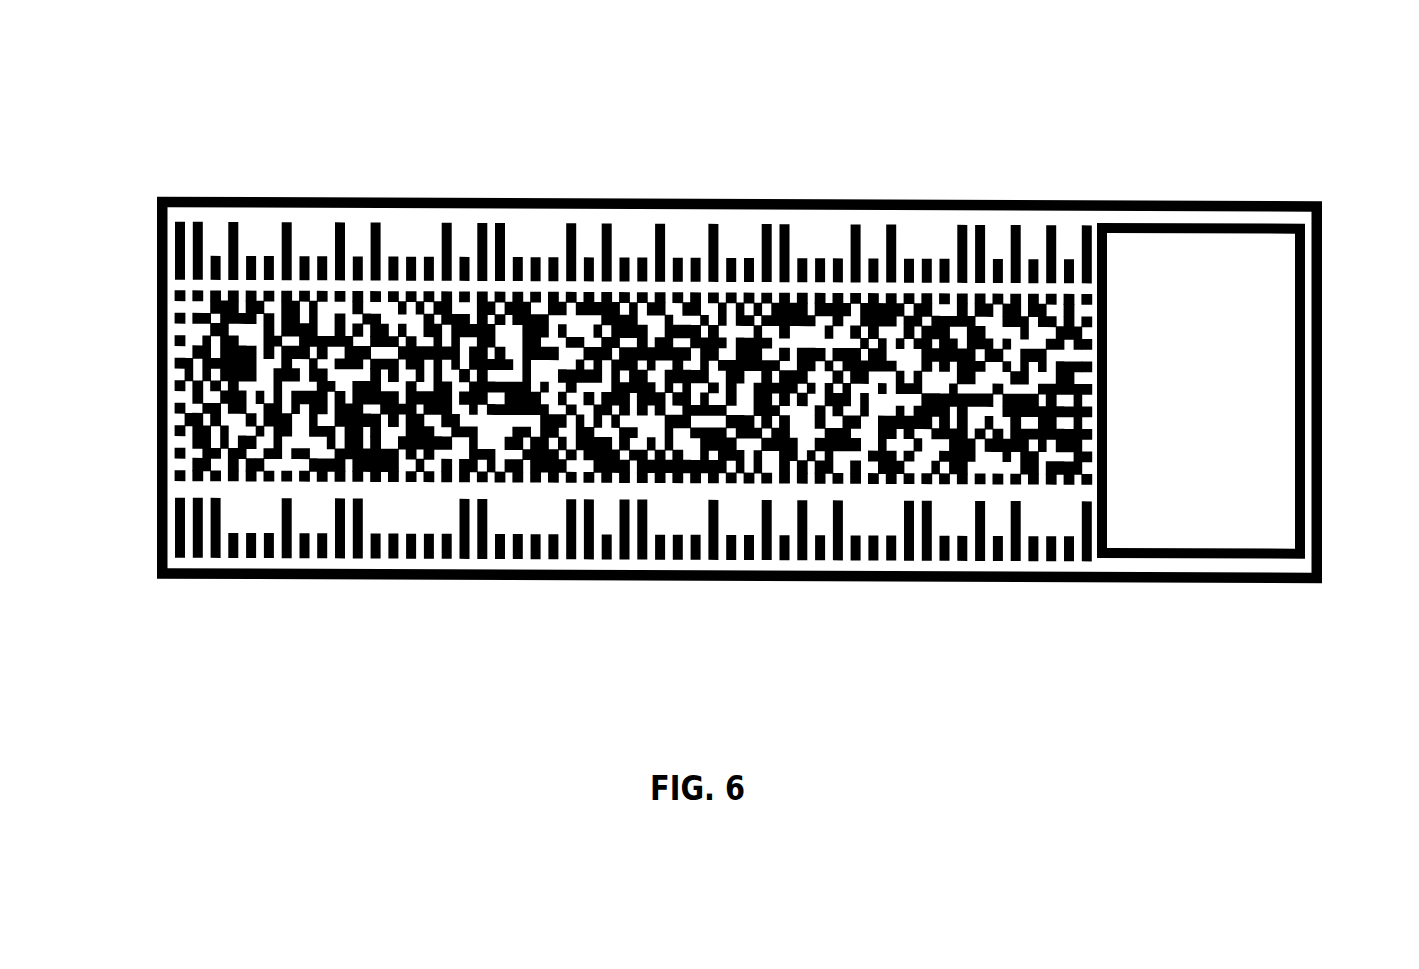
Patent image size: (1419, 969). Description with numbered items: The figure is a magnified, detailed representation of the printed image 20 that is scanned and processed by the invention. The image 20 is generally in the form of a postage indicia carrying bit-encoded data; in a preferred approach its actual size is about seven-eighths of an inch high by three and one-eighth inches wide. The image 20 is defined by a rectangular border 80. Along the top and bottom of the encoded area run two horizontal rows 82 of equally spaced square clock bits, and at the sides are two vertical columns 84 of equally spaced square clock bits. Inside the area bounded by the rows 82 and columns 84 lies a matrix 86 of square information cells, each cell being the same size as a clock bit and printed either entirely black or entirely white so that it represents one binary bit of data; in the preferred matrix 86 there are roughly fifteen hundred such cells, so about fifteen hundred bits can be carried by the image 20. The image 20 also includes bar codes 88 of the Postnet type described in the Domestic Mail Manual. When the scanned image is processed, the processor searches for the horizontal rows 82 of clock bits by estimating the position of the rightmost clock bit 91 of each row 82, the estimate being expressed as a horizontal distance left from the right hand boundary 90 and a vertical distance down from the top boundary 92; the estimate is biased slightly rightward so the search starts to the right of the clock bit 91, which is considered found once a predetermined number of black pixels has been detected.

The image 20 is at (718, 366).
The rectangular border 80 is at (629, 374).
The horizontal rows of clock bits 82 is at (147, 297).
The vertical columns of clock bits 84 is at (147, 398).
The matrix of information cells 86 is at (527, 516).
The bar codes 88 is at (562, 452).
The right hand boundary 90 is at (1323, 448).
The rightmost clock bit 91 is at (1098, 294).
The top boundary 92 is at (862, 197).